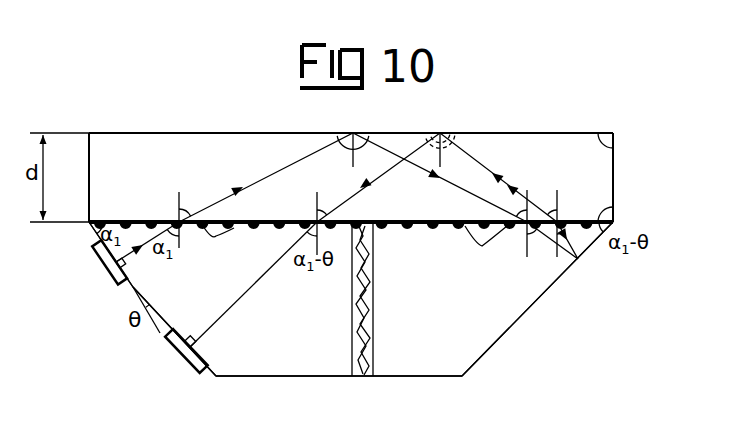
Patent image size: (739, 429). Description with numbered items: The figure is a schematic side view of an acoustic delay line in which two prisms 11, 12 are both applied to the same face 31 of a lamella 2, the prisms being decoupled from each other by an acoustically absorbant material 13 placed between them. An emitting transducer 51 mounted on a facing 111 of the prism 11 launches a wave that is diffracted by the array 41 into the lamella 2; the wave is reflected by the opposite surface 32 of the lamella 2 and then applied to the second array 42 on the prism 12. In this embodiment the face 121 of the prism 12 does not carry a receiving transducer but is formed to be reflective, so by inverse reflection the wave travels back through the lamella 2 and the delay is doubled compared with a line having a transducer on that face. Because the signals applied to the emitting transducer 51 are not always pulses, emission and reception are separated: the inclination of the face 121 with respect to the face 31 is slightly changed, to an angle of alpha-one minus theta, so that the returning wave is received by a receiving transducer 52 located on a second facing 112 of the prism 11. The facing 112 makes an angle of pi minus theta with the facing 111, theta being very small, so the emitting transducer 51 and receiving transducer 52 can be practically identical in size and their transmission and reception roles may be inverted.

The lamella 2 is at (165, 137).
The prism 11 is at (278, 377).
The prism 12 is at (432, 365).
The acoustically absorbant material 13 is at (358, 377).
The face of lamella 31 is at (602, 216).
The surface of lamella 32 is at (614, 144).
The array 41 is at (217, 237).
The array 42 is at (480, 238).
The emitting transducer 51 is at (100, 263).
The receiving transducer 52 is at (180, 344).
The facing of prism 111 is at (92, 228).
The facing of prism 112 is at (214, 377).
The face of prism 121 is at (512, 325).